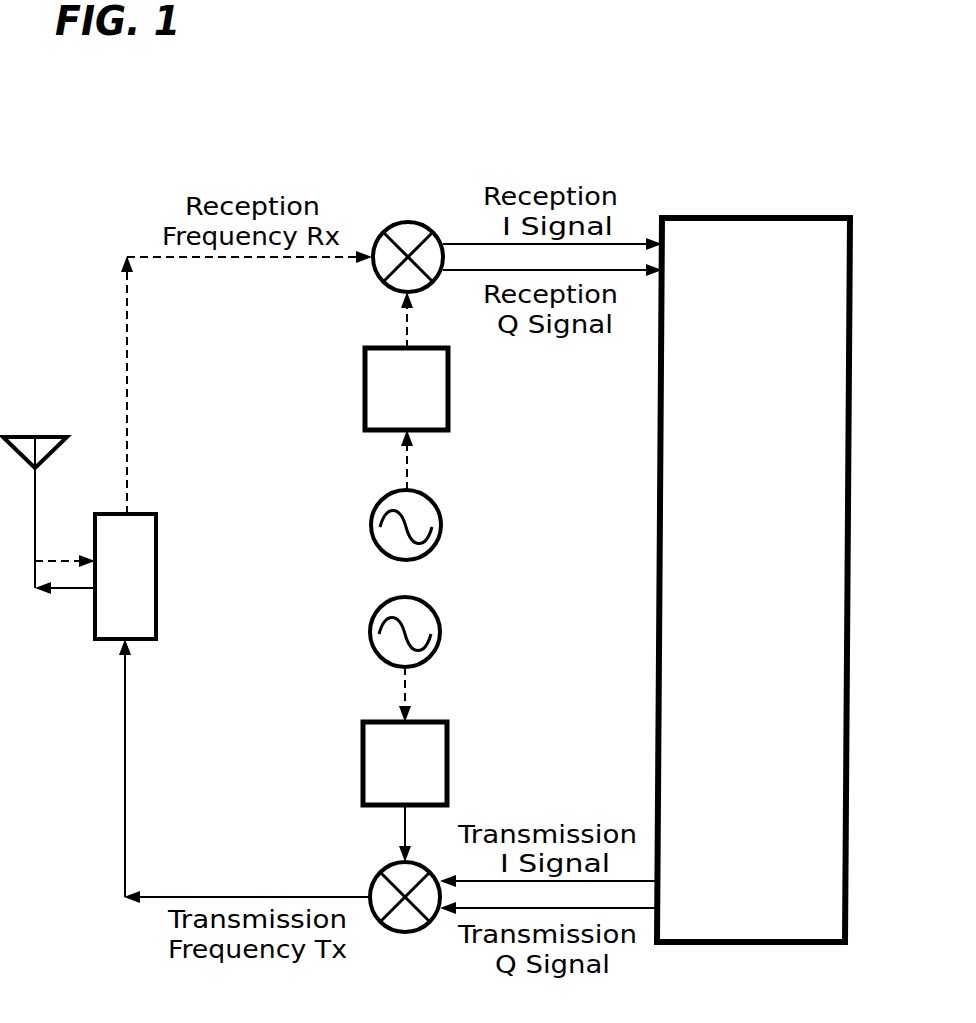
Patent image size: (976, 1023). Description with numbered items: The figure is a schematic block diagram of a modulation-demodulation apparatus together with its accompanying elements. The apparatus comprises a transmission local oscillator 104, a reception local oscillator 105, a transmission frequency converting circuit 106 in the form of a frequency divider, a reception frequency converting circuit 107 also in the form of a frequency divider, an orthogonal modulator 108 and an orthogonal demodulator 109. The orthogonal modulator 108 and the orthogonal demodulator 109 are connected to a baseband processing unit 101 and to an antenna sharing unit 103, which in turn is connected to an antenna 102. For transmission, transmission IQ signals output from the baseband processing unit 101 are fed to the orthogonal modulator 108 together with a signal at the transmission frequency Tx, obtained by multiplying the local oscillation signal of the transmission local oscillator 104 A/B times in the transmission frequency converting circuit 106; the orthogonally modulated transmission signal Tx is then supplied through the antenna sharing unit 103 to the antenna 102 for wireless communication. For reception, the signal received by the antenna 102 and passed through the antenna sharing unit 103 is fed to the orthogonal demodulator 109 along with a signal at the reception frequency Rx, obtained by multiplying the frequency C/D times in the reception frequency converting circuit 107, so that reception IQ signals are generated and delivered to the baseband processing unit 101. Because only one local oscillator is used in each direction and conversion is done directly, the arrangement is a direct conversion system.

The baseband processing unit 101 is at (760, 216).
The antenna 102 is at (22, 437).
The antenna sharing unit 103 is at (103, 642).
The transmission local oscillator 104 is at (370, 630).
The reception local oscillator 105 is at (371, 522).
The transmission frequency converting circuit 106 is at (363, 762).
The reception frequency converting circuit 107 is at (365, 385).
The orthogonal modulator 108 is at (400, 934).
The orthogonal demodulator 109 is at (410, 220).